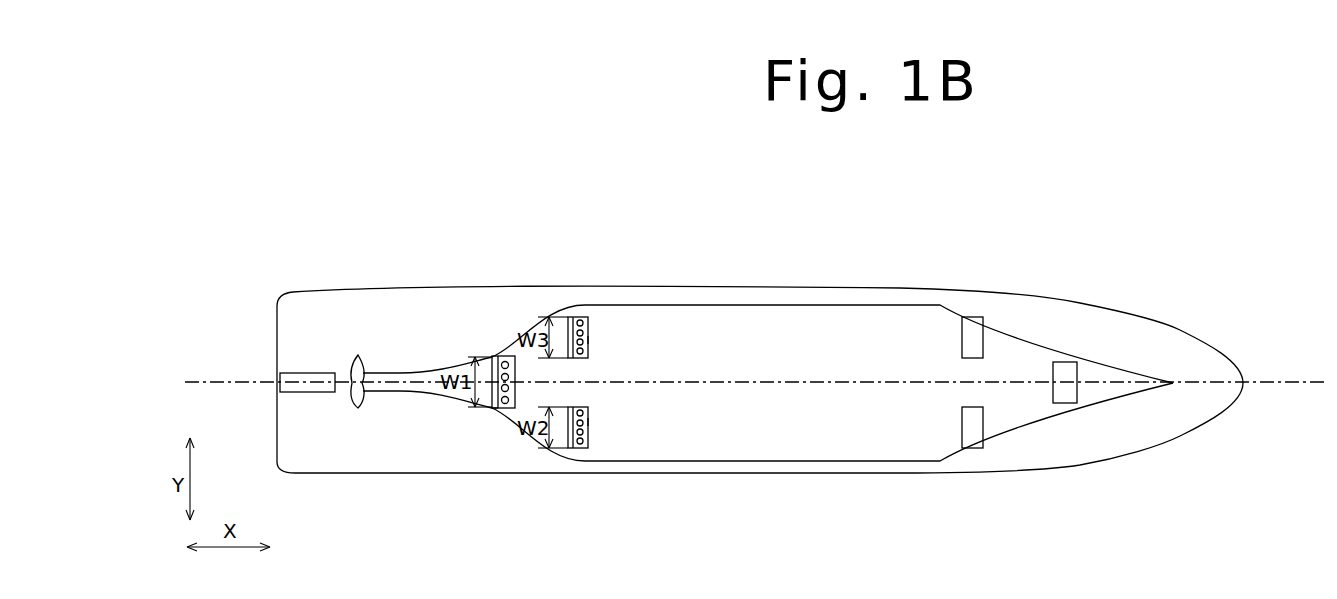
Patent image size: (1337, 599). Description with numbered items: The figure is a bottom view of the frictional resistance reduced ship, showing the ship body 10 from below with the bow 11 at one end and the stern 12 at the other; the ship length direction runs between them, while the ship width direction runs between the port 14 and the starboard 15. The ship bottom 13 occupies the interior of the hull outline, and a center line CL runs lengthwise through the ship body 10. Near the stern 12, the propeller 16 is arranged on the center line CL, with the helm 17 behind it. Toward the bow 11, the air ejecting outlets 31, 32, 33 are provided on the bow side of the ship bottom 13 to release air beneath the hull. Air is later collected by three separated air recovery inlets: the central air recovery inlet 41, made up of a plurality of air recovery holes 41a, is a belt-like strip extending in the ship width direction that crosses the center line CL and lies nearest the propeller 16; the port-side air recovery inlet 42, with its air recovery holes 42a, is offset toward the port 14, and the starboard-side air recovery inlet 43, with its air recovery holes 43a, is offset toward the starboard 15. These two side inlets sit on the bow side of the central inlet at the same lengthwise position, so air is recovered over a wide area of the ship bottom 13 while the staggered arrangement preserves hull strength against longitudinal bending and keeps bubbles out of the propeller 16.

The ship body 10 is at (731, 359).
The bow 11 is at (1243, 378).
The stern 12 is at (277, 347).
The ship bottom 13 is at (816, 430).
The port 14 is at (803, 475).
The starboard 15 is at (840, 288).
The propeller 16 is at (358, 407).
The helm 17 is at (317, 392).
The air ejecting outlet 31 is at (1053, 377).
The air ejecting outlet 32 is at (962, 430).
The air ejecting outlet 33 is at (962, 334).
The central air recovery inlet 41 is at (497, 357).
The air recovery holes 41a is at (491, 408).
The port-side air recovery inlet 42 is at (589, 418).
The air recovery holes 42a is at (591, 422).
The starboard-side air recovery inlet 43 is at (589, 328).
The air recovery holes 43a is at (591, 340).
The center line CL is at (1290, 380).